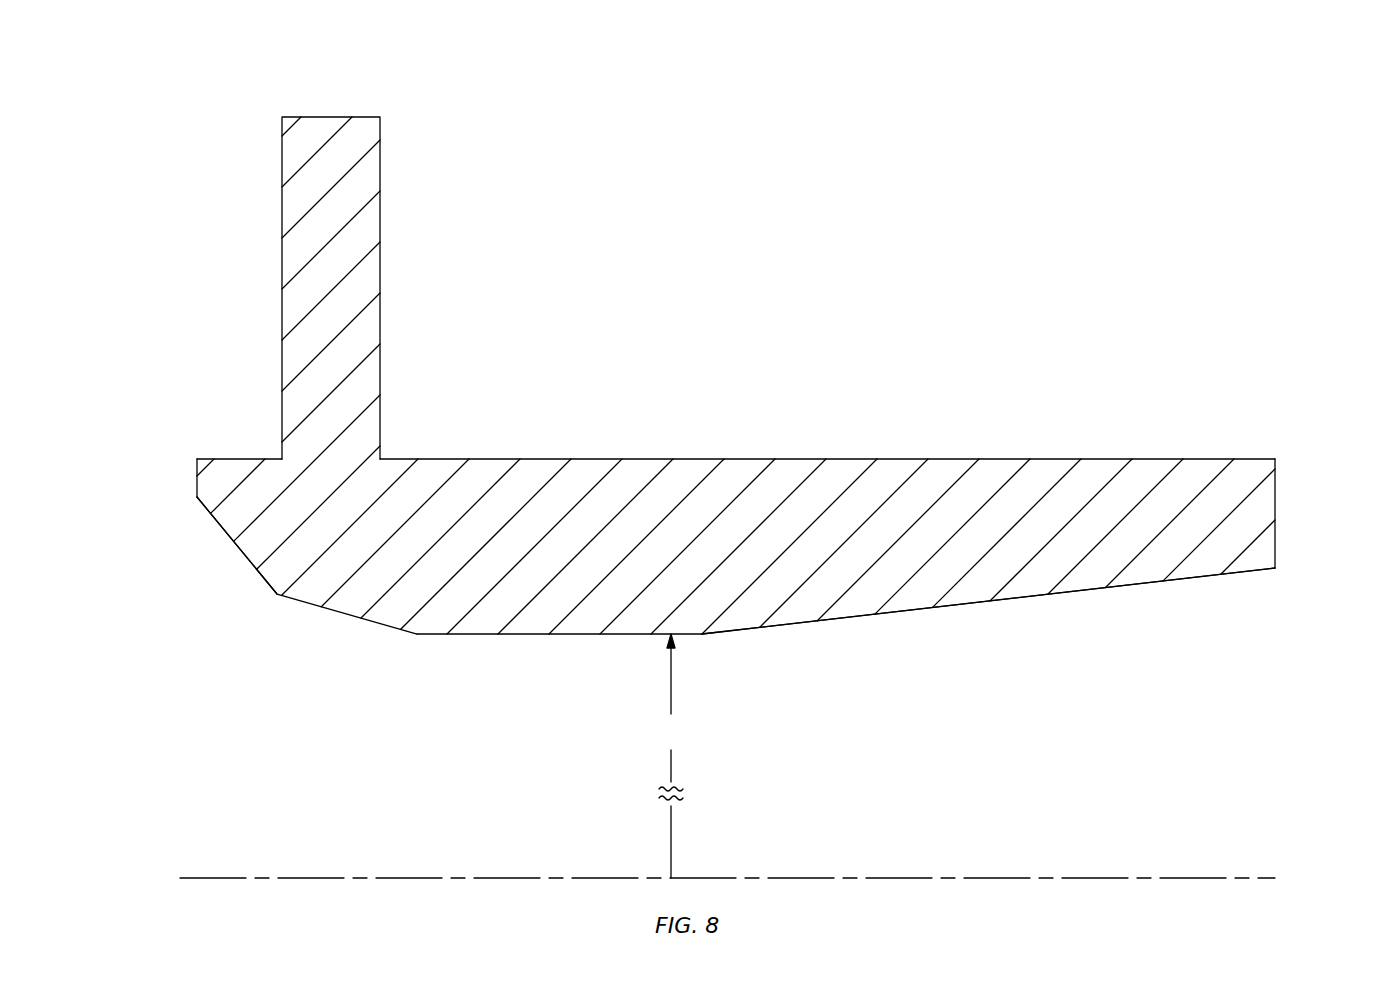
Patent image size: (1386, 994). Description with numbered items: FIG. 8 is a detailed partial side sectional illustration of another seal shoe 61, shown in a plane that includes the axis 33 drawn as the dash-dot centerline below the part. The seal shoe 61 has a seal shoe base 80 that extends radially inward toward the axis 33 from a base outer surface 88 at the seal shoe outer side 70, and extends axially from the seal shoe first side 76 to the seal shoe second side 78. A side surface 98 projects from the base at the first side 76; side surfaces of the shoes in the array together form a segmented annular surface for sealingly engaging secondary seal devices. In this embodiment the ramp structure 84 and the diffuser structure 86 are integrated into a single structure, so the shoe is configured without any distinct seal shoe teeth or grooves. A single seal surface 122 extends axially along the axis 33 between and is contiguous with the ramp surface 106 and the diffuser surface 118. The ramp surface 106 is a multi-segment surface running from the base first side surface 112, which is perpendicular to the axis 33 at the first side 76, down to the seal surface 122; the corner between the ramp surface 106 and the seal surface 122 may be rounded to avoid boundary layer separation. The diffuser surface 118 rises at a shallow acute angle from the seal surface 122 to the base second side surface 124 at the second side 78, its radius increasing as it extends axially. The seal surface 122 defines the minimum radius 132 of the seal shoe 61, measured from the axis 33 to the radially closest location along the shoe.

The seal shoe 61 is at (151, 86).
The side surface 98 is at (282, 307).
The seal shoe base 80 is at (698, 508).
The seal shoe outer side 70 is at (736, 413).
The base outer surface 88 is at (700, 458).
The seal shoe first side 76 is at (150, 445).
The base first side surface 112 is at (197, 477).
The ramp surface 106 is at (257, 569).
The ramp structure 84 is at (260, 570).
The seal surface 122 is at (483, 636).
The diffuser structure 86 is at (773, 603).
The diffuser surface 118 is at (905, 613).
The seal shoe second side 78 is at (1323, 495).
The base second side surface 124 is at (1275, 512).
The minimum radius 132 is at (678, 756).
The axis 33 is at (190, 878).